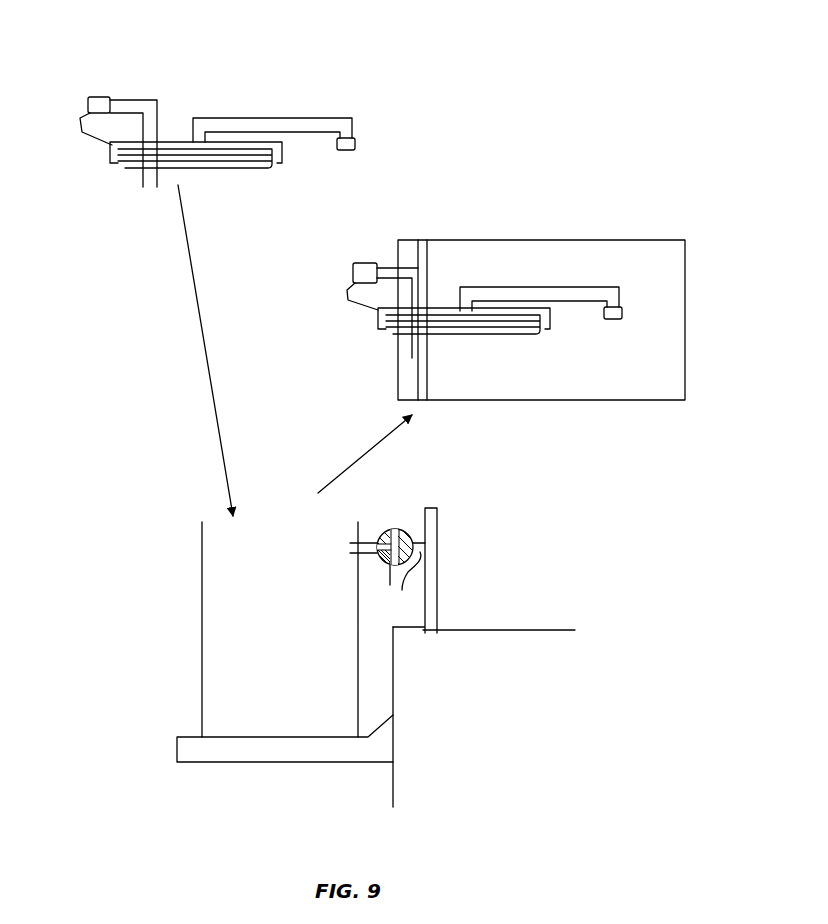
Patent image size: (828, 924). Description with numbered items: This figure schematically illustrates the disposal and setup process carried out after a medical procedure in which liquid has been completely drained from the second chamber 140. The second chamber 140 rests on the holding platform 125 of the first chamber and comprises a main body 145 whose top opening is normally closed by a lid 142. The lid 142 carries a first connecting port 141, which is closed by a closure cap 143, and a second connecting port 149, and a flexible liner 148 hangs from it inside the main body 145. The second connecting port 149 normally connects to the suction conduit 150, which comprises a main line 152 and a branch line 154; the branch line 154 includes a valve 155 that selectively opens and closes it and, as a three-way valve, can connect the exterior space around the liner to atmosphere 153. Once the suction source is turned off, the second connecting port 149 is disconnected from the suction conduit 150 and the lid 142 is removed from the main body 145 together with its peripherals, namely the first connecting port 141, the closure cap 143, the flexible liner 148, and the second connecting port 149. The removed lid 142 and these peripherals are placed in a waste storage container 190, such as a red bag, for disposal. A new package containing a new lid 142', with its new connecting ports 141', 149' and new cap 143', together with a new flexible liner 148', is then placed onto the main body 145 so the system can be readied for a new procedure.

The second chamber 140 is at (164, 678).
The holding platform 125 is at (240, 752).
The main body 145 is at (202, 615).
The suction conduit 150 is at (458, 545).
The main line 152 is at (437, 600).
The atmosphere 153 is at (398, 572).
The branch line 154 is at (402, 590).
The valve 155 is at (396, 528).
The waste storage container 190 is at (600, 240).
The lid 142 is at (467, 291).
The closure cap 143 is at (345, 259).
The first connecting port 141 is at (394, 277).
The flexible liner 148 is at (479, 353).
The second connecting port 149 is at (541, 259).
The new lid 142' is at (211, 131).
The new cap 143' is at (89, 83).
The new connecting port 141' is at (137, 104).
The new flexible liner 148' is at (178, 193).
The new connecting port 149' is at (274, 100).